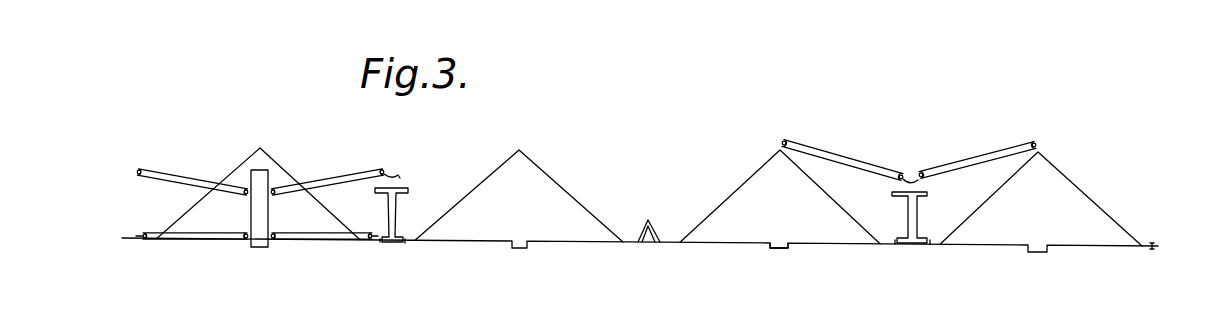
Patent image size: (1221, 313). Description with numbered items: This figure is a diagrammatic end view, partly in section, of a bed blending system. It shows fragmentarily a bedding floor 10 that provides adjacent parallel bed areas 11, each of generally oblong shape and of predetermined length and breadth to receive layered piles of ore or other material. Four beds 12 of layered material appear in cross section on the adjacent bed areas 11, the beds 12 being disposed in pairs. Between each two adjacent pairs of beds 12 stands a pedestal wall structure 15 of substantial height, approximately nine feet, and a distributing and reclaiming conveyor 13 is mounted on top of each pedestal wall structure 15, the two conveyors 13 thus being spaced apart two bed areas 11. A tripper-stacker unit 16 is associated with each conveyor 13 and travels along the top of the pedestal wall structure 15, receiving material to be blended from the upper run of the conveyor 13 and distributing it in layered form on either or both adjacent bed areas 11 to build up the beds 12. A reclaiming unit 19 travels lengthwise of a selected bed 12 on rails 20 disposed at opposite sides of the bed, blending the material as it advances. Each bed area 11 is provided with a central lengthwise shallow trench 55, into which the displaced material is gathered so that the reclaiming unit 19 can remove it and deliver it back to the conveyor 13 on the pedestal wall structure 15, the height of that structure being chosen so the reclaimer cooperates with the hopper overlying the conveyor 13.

The bedding floor 10 is at (649, 188).
The bed areas 11 is at (546, 243).
The beds 12 is at (572, 213).
The distributing and reclaiming conveyors 13 is at (392, 177).
The pedestal wall structures 15 is at (396, 208).
The tripper-stacker unit 16 is at (956, 162).
The reclaiming unit 19 is at (247, 181).
The rails 20 is at (383, 243).
The trench 55 is at (778, 247).